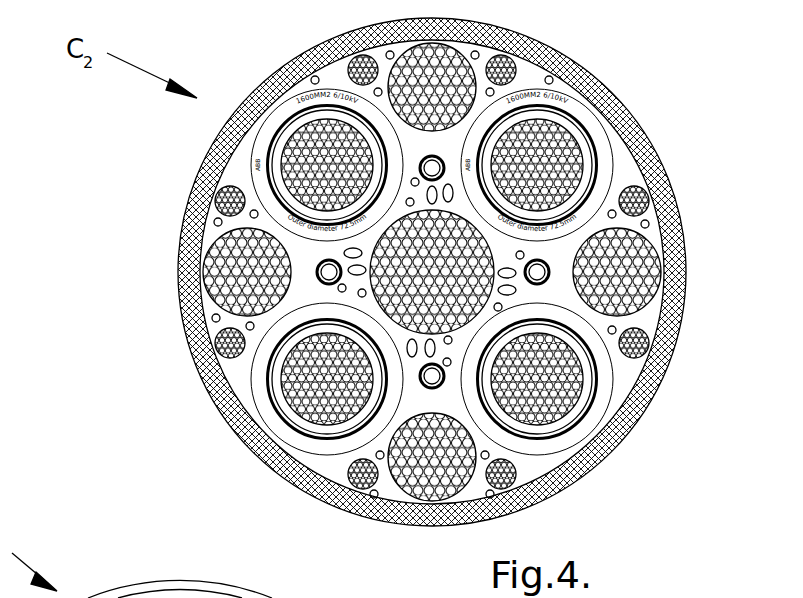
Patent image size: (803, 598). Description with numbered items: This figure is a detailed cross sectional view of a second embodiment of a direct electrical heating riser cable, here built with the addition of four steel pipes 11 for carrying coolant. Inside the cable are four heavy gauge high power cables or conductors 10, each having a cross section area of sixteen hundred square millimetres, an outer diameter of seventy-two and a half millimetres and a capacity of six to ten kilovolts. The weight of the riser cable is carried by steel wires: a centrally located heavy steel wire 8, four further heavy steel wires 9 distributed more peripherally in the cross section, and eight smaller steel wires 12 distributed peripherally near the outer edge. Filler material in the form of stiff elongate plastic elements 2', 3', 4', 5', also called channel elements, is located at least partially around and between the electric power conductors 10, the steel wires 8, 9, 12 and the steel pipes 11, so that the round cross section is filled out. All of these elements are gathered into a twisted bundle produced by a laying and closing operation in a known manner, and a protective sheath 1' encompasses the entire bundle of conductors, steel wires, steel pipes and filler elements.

The protective sheath 1' is at (432, 272).
The stiff elongate plastic element 2' is at (384, 272).
The stiff elongate plastic element 3' is at (407, 272).
The stiff elongate plastic element 4' is at (209, 275).
The stiff elongate plastic element 5' is at (287, 403).
The heavy steel wire 8 is at (467, 248).
The heavy steel wire 9 is at (638, 263).
The high power cable 10 is at (552, 380).
The steel pipe 11 is at (550, 274).
The smaller steel wire 12 is at (636, 355).